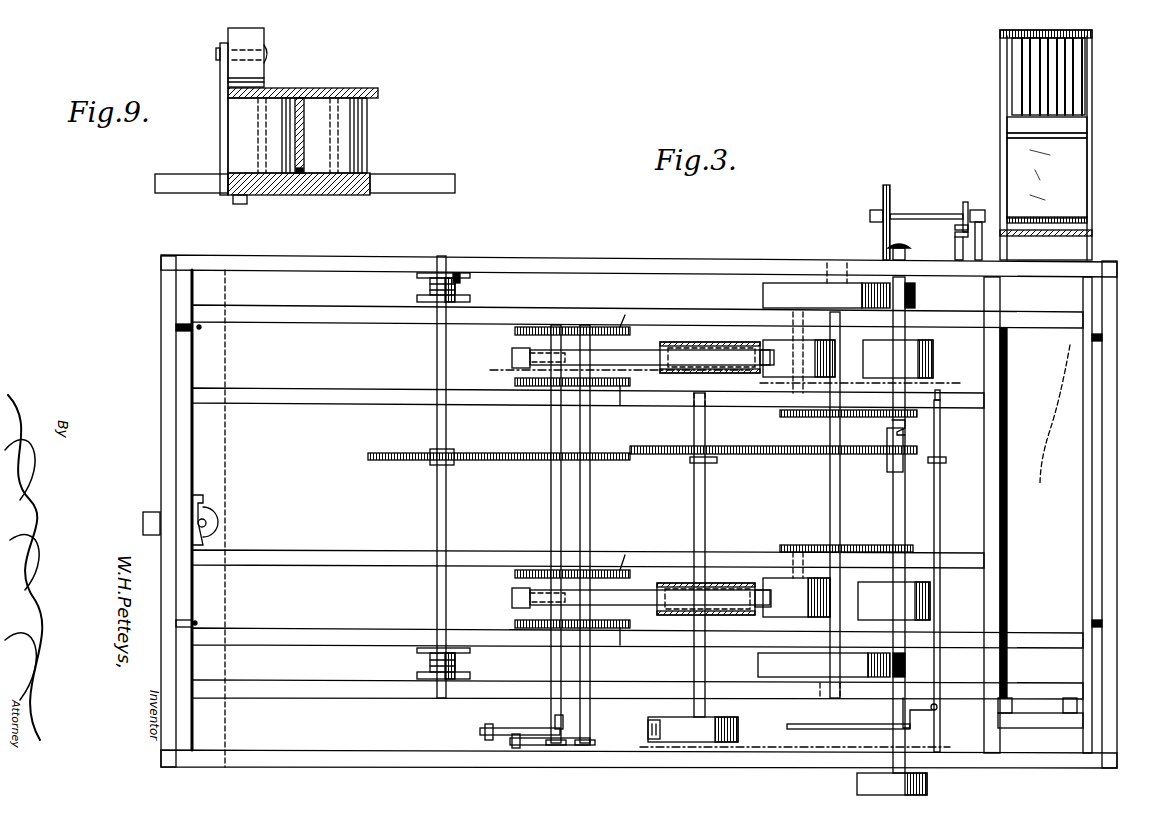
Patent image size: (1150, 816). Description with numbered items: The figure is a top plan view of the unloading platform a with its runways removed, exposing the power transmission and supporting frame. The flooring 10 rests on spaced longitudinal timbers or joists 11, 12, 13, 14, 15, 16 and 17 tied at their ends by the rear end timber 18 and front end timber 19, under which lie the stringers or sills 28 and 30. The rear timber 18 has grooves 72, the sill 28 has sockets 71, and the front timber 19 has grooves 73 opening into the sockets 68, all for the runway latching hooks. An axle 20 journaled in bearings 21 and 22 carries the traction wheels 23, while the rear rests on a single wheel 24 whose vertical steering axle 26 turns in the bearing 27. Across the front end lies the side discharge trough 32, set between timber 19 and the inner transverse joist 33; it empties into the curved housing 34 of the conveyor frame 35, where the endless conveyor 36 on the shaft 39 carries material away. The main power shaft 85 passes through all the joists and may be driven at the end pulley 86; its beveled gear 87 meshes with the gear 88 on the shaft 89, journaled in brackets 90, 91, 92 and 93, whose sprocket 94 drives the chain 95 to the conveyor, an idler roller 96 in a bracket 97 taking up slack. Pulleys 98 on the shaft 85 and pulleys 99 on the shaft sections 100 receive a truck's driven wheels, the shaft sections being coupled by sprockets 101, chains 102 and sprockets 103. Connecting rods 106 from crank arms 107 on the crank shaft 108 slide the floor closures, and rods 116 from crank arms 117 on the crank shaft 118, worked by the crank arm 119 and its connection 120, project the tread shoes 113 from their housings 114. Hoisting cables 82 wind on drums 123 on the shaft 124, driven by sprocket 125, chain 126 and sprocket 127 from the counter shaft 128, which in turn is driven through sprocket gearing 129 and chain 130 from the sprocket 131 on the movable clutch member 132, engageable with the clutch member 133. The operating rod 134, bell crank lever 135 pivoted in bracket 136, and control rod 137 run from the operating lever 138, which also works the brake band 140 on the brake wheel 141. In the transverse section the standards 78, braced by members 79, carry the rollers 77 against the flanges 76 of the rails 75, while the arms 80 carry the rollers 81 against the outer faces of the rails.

In FIG. 9, the rollers 81 is at (258, 42).
In FIG. 9, the arms 80 is at (220, 75).
In FIG. 9, the posts or trackways 75 is at (345, 88).
In FIG. 9, the flanges 76 is at (304, 115).
In FIG. 9, the rollers 77 is at (240, 147).
In FIG. 9, the standards 78 is at (305, 190).
In FIG. 9, the brace members 79 is at (190, 188).
In FIG. 3, the rear end timber or joist 18 is at (176, 465).
In FIG. 3, the stringer or sill 28 is at (176, 378).
In FIG. 3, the front end timber or joist 19 is at (1117, 522).
In FIG. 3, the stringer or sill 30 is at (1110, 700).
In FIG. 3, the longitudinal timber or joist 17 is at (325, 270).
In FIG. 3, the longitudinal timber or joist 16 is at (325, 322).
In FIG. 3, the longitudinal timber or joist 15 is at (325, 403).
In FIG. 3, the longitudinal timber or joist 14 is at (335, 565).
In FIG. 3, the longitudinal timber or joist 13 is at (323, 645).
In FIG. 3, the longitudinal timber or joist 12 is at (330, 698).
In FIG. 3, the longitudinal timber or joist 11 is at (320, 767).
In FIG. 3, the grooves 72 is at (176, 328).
In FIG. 3, the openings or sockets 71 is at (199, 327).
In FIG. 3, the ground or traction wheel 24 is at (143, 522).
In FIG. 3, the bearing or boxing 27 is at (210, 503).
In FIG. 3, the steering axle 26 is at (206, 523).
In FIG. 3, the shaft 124 is at (437, 505).
In FIG. 3, the crank shaft 118 is at (551, 490).
In FIG. 3, the crank shaft 108 is at (590, 490).
In FIG. 3, the counter shaft 128 is at (705, 493).
In FIG. 3, the axle 20 is at (830, 497).
In FIG. 3, the main power shaft 85 is at (893, 503).
In FIG. 3, the operating rod 134 is at (940, 530).
In FIG. 3, the clutch member 133 is at (975, 440).
In FIG. 3, the inner transverse timber or joist 33 is at (984, 493).
In FIG. 3, the side discharge trough 32 is at (1040, 528).
In FIG. 3, the grooves 73 is at (1083, 338).
In FIG. 3, the bores or sockets 68 is at (1102, 337).
In FIG. 3, the cables 82 is at (417, 298).
In FIG. 3, the winding drums 123 is at (470, 285).
In FIG. 3, the crank arms 107 is at (540, 327).
In FIG. 3, the connecting rods 106 is at (626, 480).
In FIG. 3, the rods 116 is at (648, 340).
In FIG. 3, the crank arms 117 is at (512, 358).
In FIG. 3, the flooring 10 is at (490, 370).
In FIG. 3, the casings or housings 114 is at (690, 342).
In FIG. 3, the tread elements or shoes 113 is at (690, 358).
In FIG. 3, the wheels or pulleys 99 is at (795, 370).
In FIG. 3, the shaft section 100 is at (790, 340).
In FIG. 3, the wheels or pulleys 98 is at (933, 358).
In FIG. 3, the ground or traction wheels 23 is at (763, 297).
In FIG. 3, the bearing 22 is at (830, 262).
In FIG. 3, the bracket 136 is at (905, 665).
In FIG. 3, the sprockets 101 is at (800, 417).
In FIG. 3, the sprocket chains 102 is at (870, 417).
In FIG. 3, the sprockets 103 is at (905, 425).
In FIG. 3, the sprocket 131 is at (887, 460).
In FIG. 3, the movable clutch member 132 is at (905, 470).
In FIG. 3, the sprocket 125 is at (395, 453).
In FIG. 3, the sprocket chain 126 is at (480, 453).
In FIG. 3, the sprocket gearing 129 is at (650, 446).
In FIG. 3, the sprocket chain 130 is at (790, 454).
In FIG. 3, the sprocket 127 is at (690, 463).
In FIG. 3, the brake band 140 is at (738, 727).
In FIG. 3, the operating lever 138 is at (648, 728).
In FIG. 3, the brake wheel 141 is at (710, 735).
In FIG. 3, the crank arm 119 is at (540, 716).
In FIG. 3, the connection 120 is at (510, 741).
In FIG. 3, the control rod 137 is at (845, 724).
In FIG. 3, the bearing 21 is at (820, 698).
In FIG. 3, the bell crank lever 135 is at (915, 715).
In FIG. 3, the end gear or pulley 86 is at (927, 783).
In FIG. 3, the beveled gear 88 is at (890, 193).
In FIG. 3, the bearing bracket 90 is at (870, 218).
In FIG. 3, the shaft 89 is at (925, 214).
In FIG. 3, the beveled gear 87 is at (899, 240).
In FIG. 3, the sprocket chain 95 is at (965, 202).
In FIG. 3, the sprocket 94 is at (955, 228).
In FIG. 3, the idler roller 96 is at (955, 235).
In FIG. 3, the bracket 97 is at (955, 250).
In FIG. 3, the bearing bracket 92 is at (975, 210).
In FIG. 3, the bearing bracket 91 is at (988, 240).
In FIG. 3, the endless belt or chain conveyor 36 is at (1092, 75).
In FIG. 3, the conveyor frame 35 is at (1030, 80).
In FIG. 3, the curved housing portion 34 is at (1047, 178).
In FIG. 3, the shaft 39 is at (1070, 217).
In FIG. 3, the bearing bracket 93 is at (1092, 233).
In FIG. 3, the unloading platform a is at (1092, 140).